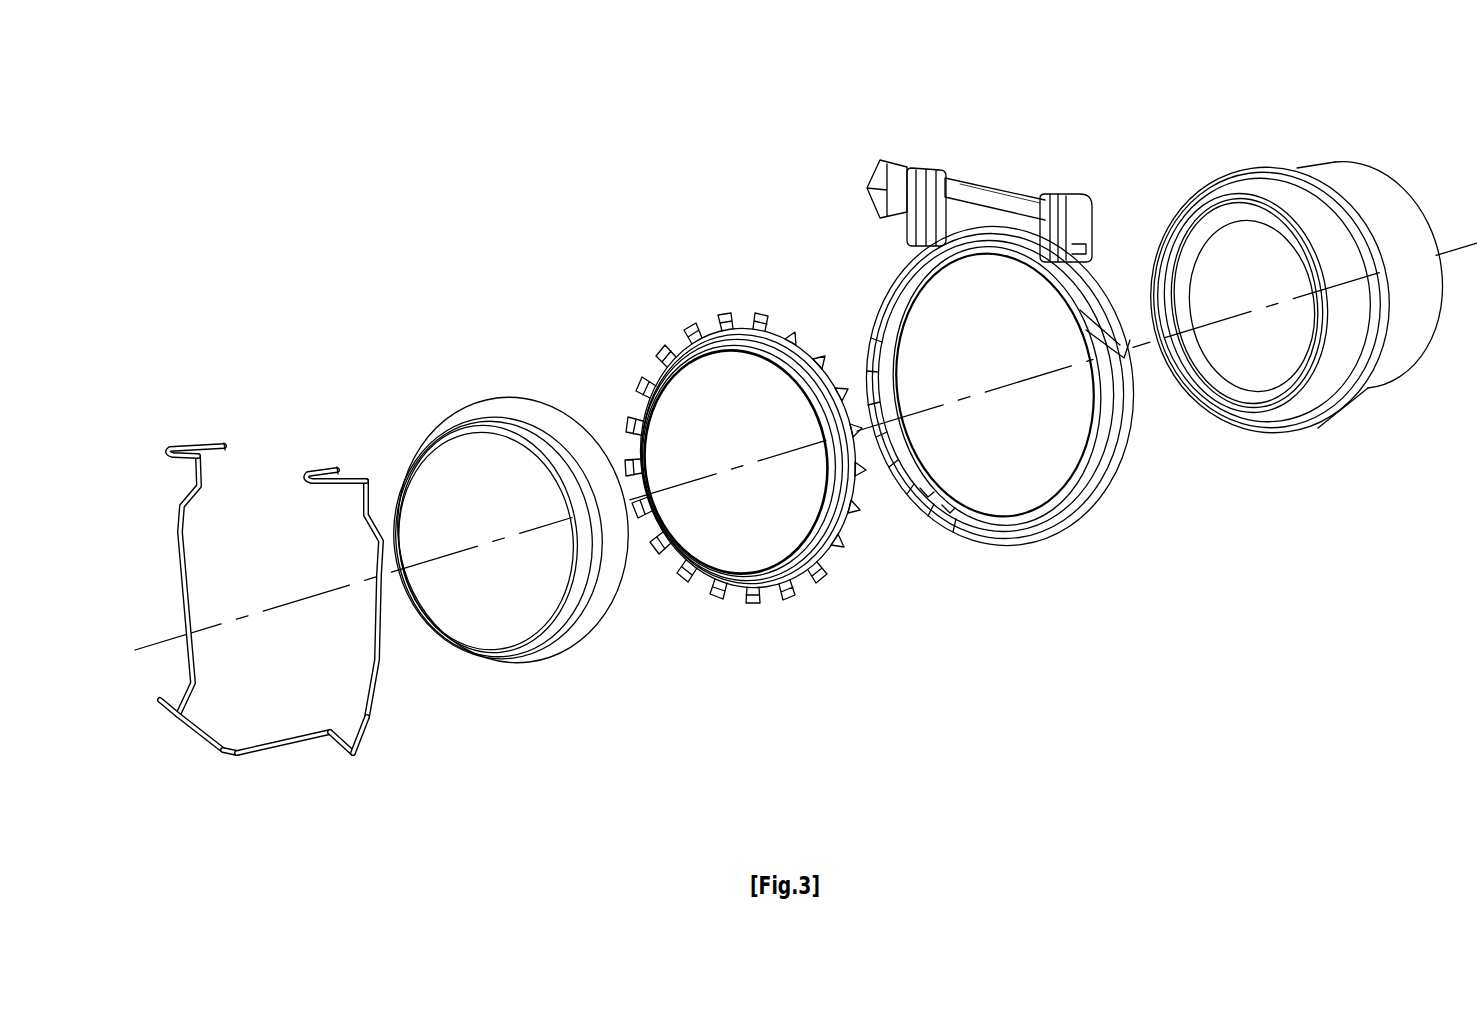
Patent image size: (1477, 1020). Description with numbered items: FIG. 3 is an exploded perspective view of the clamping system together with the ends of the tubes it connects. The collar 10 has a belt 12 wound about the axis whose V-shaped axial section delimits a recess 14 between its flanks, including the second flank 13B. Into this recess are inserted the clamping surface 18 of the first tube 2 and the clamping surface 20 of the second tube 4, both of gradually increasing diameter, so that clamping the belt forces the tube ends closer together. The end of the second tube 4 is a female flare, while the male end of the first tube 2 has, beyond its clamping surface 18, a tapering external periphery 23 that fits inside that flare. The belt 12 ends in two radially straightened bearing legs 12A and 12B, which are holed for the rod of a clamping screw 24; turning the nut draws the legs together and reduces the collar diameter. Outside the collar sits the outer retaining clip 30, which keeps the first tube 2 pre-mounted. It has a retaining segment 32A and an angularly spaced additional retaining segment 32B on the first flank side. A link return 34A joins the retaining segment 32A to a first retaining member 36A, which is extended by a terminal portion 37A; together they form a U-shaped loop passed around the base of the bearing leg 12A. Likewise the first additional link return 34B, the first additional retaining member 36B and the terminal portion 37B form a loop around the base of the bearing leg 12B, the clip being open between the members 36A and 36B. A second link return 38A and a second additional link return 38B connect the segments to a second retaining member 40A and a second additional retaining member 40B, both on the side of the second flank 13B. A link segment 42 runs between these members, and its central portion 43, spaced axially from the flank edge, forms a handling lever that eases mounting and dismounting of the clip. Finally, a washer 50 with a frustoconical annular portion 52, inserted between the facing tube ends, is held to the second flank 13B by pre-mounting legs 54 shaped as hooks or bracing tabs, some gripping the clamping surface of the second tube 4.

The first tube 2 is at (1410, 400).
The second tube 4 is at (530, 668).
The collar 10 is at (1136, 495).
The belt 12 is at (1057, 525).
The bearing leg 12A is at (938, 180).
The bearing leg 12B is at (1055, 200).
The second flank 13B is at (998, 537).
The recess 14 is at (948, 508).
The clamping surface 18 is at (1344, 430).
The clamping surface 20 is at (580, 640).
The external periphery 23 is at (1288, 420).
The clamping screw 24 is at (998, 174).
The outer retaining clip 30 is at (284, 617).
The retaining segment 32A is at (182, 592).
The additional retaining segment 32B is at (376, 628).
The link return 34A is at (178, 447).
The first additional link return 34B is at (356, 475).
The first retaining member 36A is at (172, 460).
The first additional retaining member 36B is at (318, 482).
The terminal portion 37A is at (220, 447).
The terminal portion 37B is at (322, 468).
The second link return 38A is at (172, 722).
The second additional link return 38B is at (360, 762).
The second retaining member 40A is at (162, 702).
The second additional retaining member 40B is at (333, 737).
The link segment 42 is at (241, 768).
The central portion 43 is at (228, 752).
The washer 50 is at (848, 617).
The frustoconical annular portion 52 is at (762, 580).
The pre-mounting legs 54 is at (668, 586).